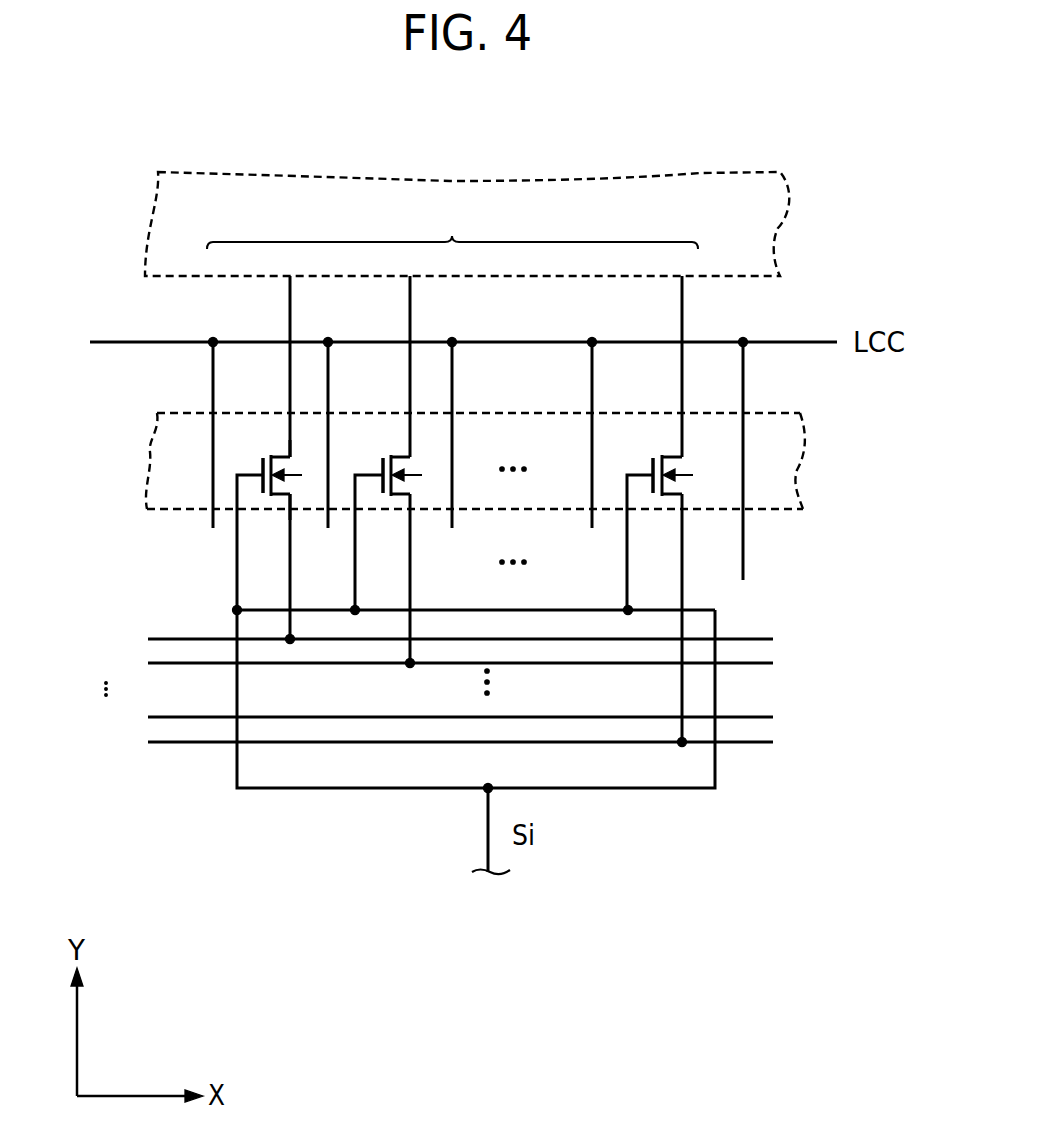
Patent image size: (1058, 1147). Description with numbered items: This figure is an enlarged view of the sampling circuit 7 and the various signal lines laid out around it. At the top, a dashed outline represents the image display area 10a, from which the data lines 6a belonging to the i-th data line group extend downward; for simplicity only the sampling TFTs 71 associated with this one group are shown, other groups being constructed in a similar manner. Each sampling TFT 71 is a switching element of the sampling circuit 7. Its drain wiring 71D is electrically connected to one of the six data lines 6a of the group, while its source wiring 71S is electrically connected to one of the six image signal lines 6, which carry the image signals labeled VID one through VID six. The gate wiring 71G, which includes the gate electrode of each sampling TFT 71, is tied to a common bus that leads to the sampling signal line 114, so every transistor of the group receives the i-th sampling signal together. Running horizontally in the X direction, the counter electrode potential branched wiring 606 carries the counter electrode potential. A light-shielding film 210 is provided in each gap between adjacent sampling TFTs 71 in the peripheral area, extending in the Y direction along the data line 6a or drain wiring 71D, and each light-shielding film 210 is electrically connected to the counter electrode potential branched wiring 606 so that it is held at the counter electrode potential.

The image display area 10a is at (790, 228).
The data line 6a is at (290, 304).
The counter electrode potential branched wiring 606 is at (800, 342).
The light-shielding film 210 is at (213, 383).
The sampling circuit 7 is at (150, 451).
The sampling TFT 71 is at (264, 468).
The drain wiring 71D is at (290, 381).
The gate wiring 71G is at (237, 550).
The source wiring 71S is at (290, 545).
The image signal lines 6 is at (788, 632).
The sampling signal line 114 is at (487, 835).